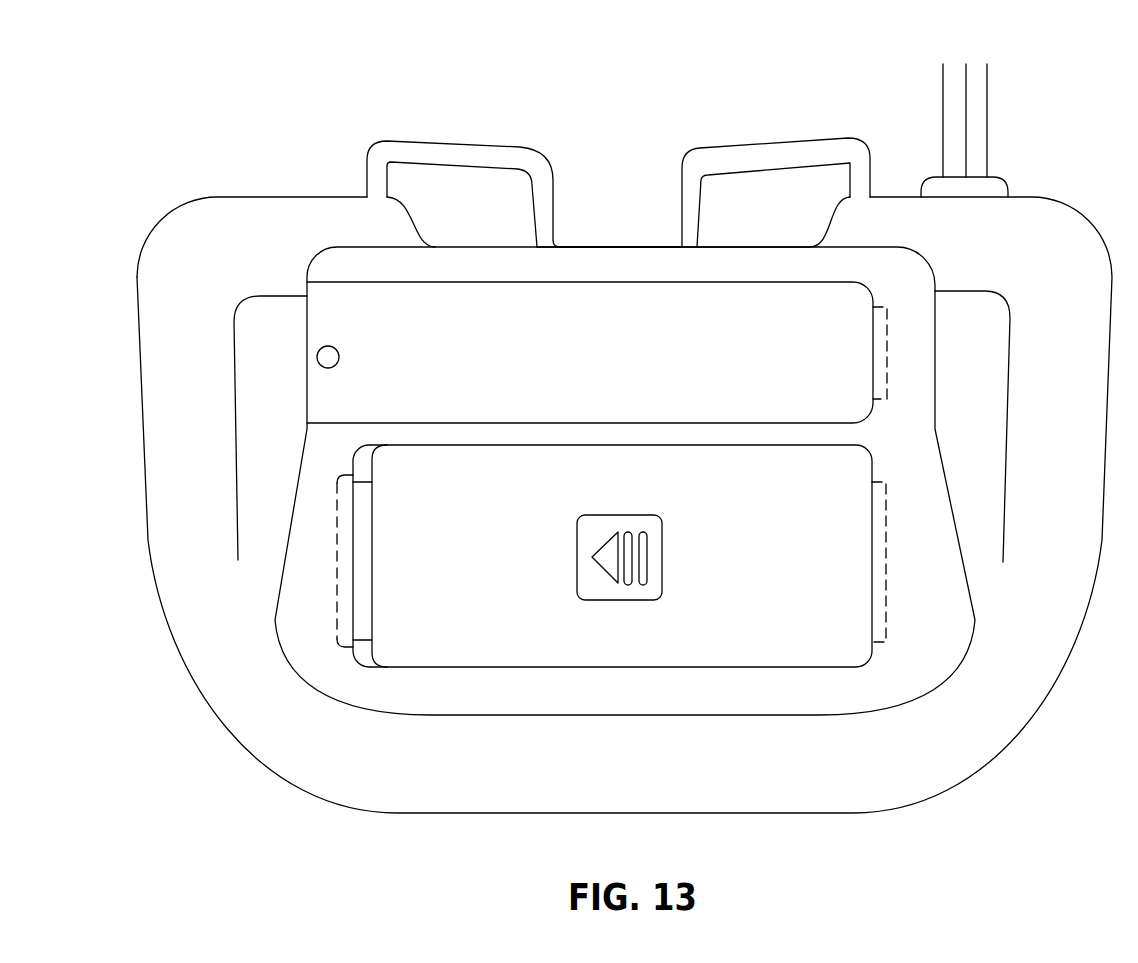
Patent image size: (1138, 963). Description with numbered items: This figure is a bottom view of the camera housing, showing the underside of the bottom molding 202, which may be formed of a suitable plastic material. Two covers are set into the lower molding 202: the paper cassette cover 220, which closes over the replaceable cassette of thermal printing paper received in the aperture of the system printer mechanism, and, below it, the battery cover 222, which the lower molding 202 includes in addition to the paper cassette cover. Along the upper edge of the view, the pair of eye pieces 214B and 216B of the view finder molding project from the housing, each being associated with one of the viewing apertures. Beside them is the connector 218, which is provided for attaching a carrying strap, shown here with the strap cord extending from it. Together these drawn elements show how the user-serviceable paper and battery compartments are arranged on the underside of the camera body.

The bottom molding 202 is at (183, 570).
The eye piece 214B is at (453, 157).
The eye piece 216B is at (715, 157).
The connector 218 is at (993, 188).
The paper cassette cover 220 is at (430, 366).
The battery cover 222 is at (785, 552).